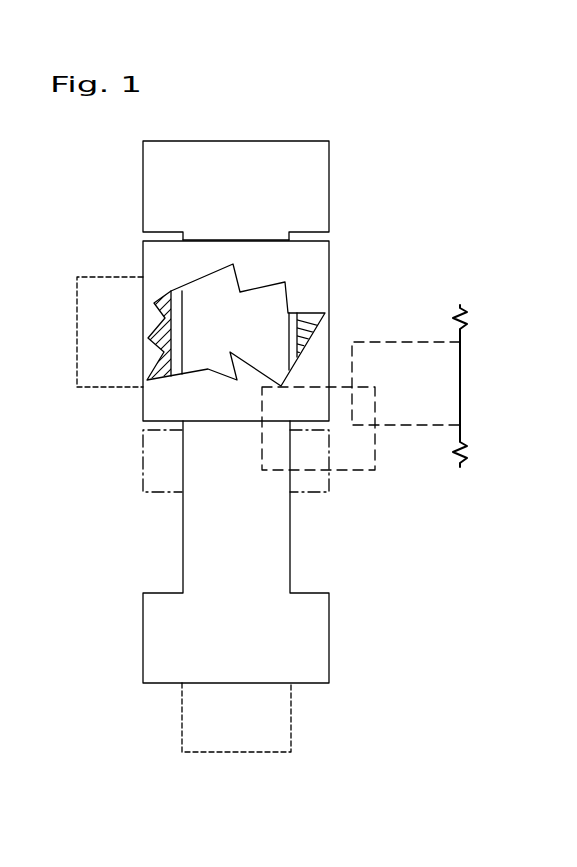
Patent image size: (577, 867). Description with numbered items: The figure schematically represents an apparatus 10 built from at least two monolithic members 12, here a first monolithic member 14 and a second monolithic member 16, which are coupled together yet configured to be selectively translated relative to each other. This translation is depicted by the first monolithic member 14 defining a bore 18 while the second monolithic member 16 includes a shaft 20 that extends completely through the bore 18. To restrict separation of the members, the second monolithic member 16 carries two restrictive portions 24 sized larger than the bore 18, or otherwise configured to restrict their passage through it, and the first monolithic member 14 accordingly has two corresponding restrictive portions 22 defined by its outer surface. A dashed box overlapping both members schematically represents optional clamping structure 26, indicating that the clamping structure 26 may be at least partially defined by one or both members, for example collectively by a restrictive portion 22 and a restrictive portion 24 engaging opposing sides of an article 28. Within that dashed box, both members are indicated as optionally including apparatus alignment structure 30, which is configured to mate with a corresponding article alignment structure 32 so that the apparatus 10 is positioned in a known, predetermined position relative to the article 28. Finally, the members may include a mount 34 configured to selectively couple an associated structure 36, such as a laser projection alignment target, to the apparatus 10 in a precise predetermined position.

The apparatus 10 is at (450, 132).
The monolithic members 12 is at (392, 152).
The first monolithic member 14 is at (334, 258).
The second monolithic member 16 is at (270, 137).
The bore 18 is at (170, 322).
The shaft 20 is at (290, 535).
The restrictive portions 22 is at (141, 163).
The restrictive portions 24 is at (310, 237).
The clamping structure 26 is at (350, 475).
The article 28 is at (392, 342).
The apparatus alignment structure 30 is at (305, 393).
The article alignment structure 32 is at (420, 410).
The mount 34 is at (158, 293).
The associated structure 36 is at (75, 367).